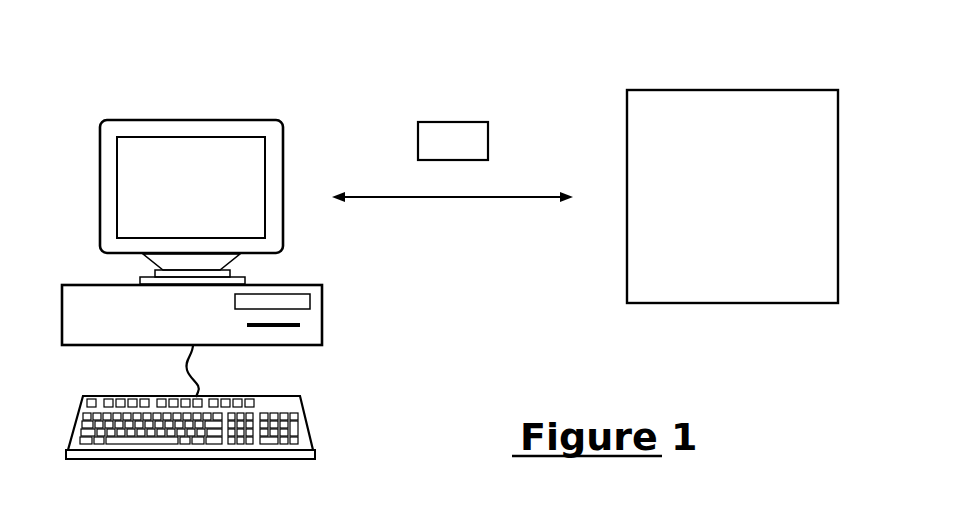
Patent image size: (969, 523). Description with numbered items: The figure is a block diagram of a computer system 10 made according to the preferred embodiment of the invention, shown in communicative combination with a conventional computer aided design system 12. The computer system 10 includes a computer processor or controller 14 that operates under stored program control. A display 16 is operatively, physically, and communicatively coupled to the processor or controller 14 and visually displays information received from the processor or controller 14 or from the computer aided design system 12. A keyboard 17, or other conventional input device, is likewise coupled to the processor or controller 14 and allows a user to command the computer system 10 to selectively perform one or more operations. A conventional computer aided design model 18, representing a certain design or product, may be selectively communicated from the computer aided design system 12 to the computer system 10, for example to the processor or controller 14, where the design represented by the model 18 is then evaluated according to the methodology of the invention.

The computer system 10 is at (240, 78).
The computer aided design system 12 is at (730, 304).
The computer processor or controller 14 is at (322, 312).
The display 16 is at (273, 163).
The keyboard 17 is at (312, 426).
The computer aided design model 18 is at (452, 134).